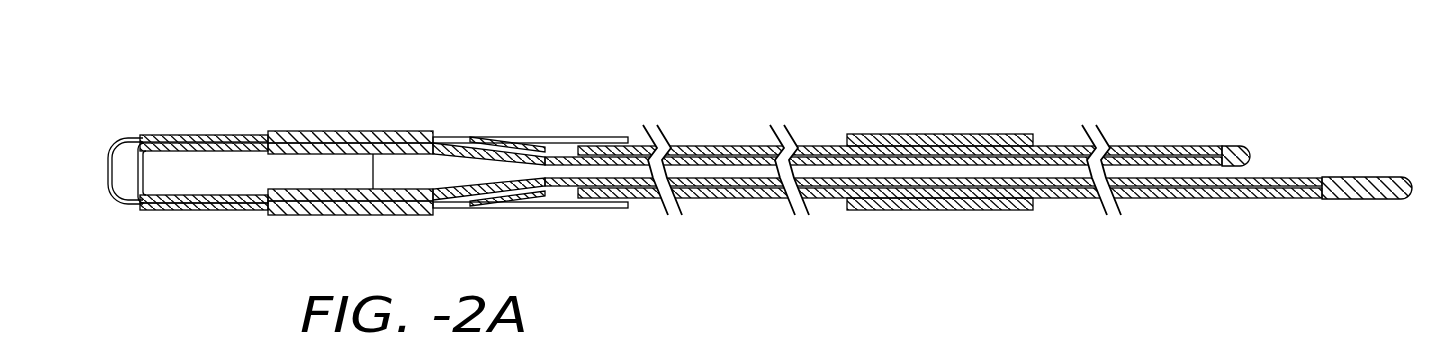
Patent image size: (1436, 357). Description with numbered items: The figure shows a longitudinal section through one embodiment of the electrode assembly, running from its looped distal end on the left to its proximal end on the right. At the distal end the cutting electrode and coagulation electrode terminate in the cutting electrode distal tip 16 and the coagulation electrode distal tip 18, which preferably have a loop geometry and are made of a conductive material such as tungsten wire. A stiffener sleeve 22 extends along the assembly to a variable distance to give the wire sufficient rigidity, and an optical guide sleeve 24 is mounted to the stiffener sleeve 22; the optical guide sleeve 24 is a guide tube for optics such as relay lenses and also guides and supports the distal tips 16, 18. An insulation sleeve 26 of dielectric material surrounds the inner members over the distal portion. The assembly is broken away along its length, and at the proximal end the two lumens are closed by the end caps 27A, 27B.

The cutting electrode distal tip 16 is at (138, 178).
The coagulation electrode distal tip 18 is at (108, 174).
The stiffener sleeve 22 is at (300, 140).
The optical guide sleeve 24 is at (522, 138).
The insulation sleeve 26 is at (187, 135).
The end cap 27A is at (1232, 146).
The end cap 27B is at (1360, 177).